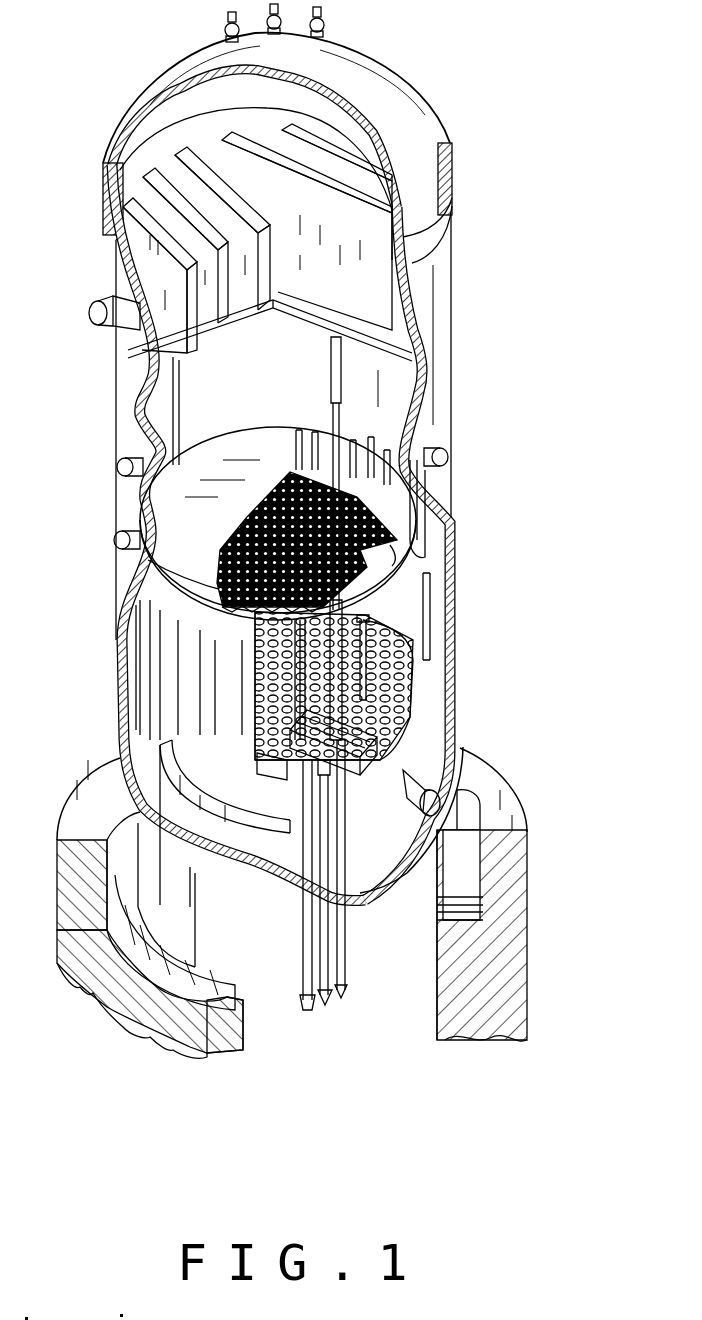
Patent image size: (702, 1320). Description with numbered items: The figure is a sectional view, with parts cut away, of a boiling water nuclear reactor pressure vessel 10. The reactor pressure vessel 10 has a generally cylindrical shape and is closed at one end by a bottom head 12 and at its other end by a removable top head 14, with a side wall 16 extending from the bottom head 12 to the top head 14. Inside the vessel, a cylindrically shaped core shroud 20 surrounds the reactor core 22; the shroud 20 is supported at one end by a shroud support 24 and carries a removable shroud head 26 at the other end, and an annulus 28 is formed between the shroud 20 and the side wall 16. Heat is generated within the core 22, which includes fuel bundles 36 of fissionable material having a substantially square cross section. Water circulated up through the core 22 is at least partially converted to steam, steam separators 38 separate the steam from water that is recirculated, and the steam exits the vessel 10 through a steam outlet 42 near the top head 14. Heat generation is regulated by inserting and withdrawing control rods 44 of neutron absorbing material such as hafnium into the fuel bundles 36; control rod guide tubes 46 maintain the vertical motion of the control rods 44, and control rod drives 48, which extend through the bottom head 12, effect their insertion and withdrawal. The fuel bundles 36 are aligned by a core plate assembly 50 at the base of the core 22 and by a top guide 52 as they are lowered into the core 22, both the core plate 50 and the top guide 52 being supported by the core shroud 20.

The reactor pressure vessel 10 is at (486, 66).
The bottom head 12 is at (375, 897).
The top head 14 is at (372, 54).
The side wall 16 is at (120, 732).
The core shroud 20 is at (165, 600).
The reactor core 22 is at (380, 610).
The shroud support 24 is at (123, 756).
The shroud head 26 is at (272, 427).
The annulus 28 is at (137, 653).
The fuel bundles 36 is at (360, 655).
The steam separators 38 is at (337, 396).
The steam outlet 42 is at (83, 317).
The control rods 44 is at (430, 622).
The control rod guide tubes 46 is at (400, 770).
The control rod drives 48 is at (340, 957).
The core plate assembly 50 is at (430, 690).
The top guide 52 is at (400, 583).